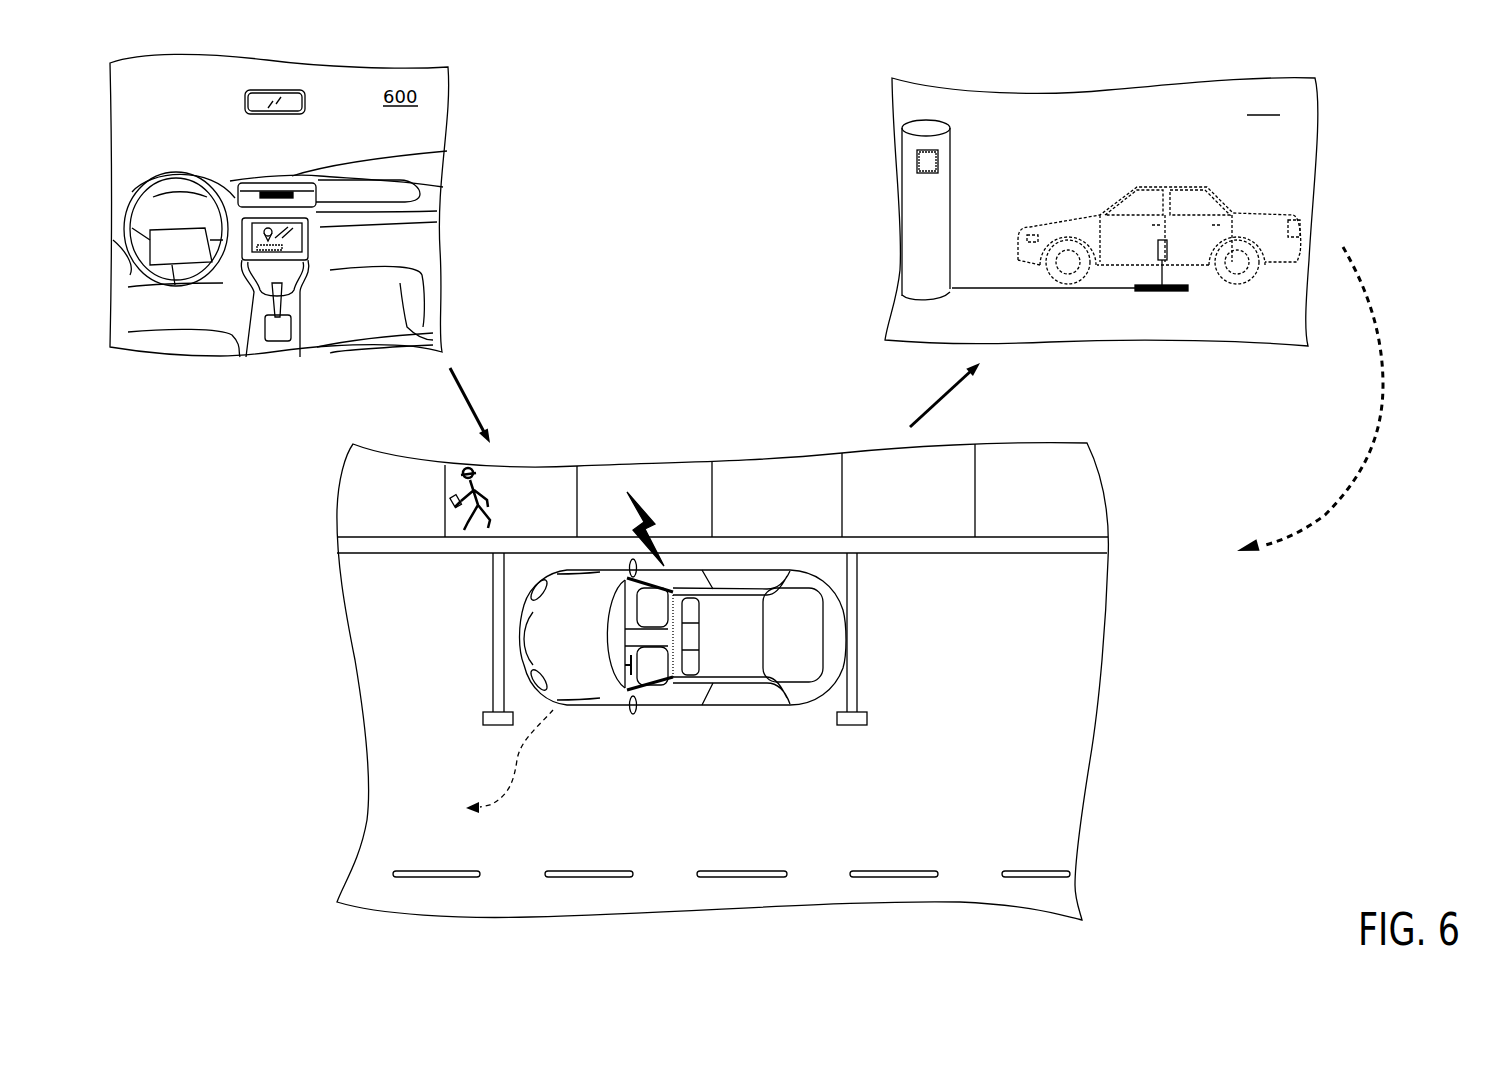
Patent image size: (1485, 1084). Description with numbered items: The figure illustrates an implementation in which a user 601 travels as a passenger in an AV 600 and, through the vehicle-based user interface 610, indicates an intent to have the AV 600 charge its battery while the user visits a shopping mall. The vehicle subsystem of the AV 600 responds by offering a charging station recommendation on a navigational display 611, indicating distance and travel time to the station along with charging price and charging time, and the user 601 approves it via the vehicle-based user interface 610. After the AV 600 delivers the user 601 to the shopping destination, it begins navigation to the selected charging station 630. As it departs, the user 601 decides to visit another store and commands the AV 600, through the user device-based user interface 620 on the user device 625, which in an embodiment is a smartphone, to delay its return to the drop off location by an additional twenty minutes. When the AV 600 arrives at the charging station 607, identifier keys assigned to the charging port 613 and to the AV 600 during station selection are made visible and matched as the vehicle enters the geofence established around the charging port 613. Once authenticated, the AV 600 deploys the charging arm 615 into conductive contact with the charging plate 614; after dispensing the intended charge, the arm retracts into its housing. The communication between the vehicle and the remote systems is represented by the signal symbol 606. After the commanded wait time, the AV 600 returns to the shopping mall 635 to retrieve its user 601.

The AV 600 is at (787, 578).
The user 601 is at (478, 475).
The wireless communication signal 606 is at (648, 518).
The charging station 607 is at (1264, 105).
The vehicle-based user interface 610 is at (304, 214).
The navigational display 611 is at (275, 243).
The charging port 613 is at (966, 130).
The charging plate 614 is at (1145, 291).
The charging arm 615 is at (1182, 273).
The user device-based user interface 620 is at (453, 500).
The user device 625 is at (453, 496).
The selected charging station 630 is at (518, 773).
The shopping mall 635 is at (1358, 465).